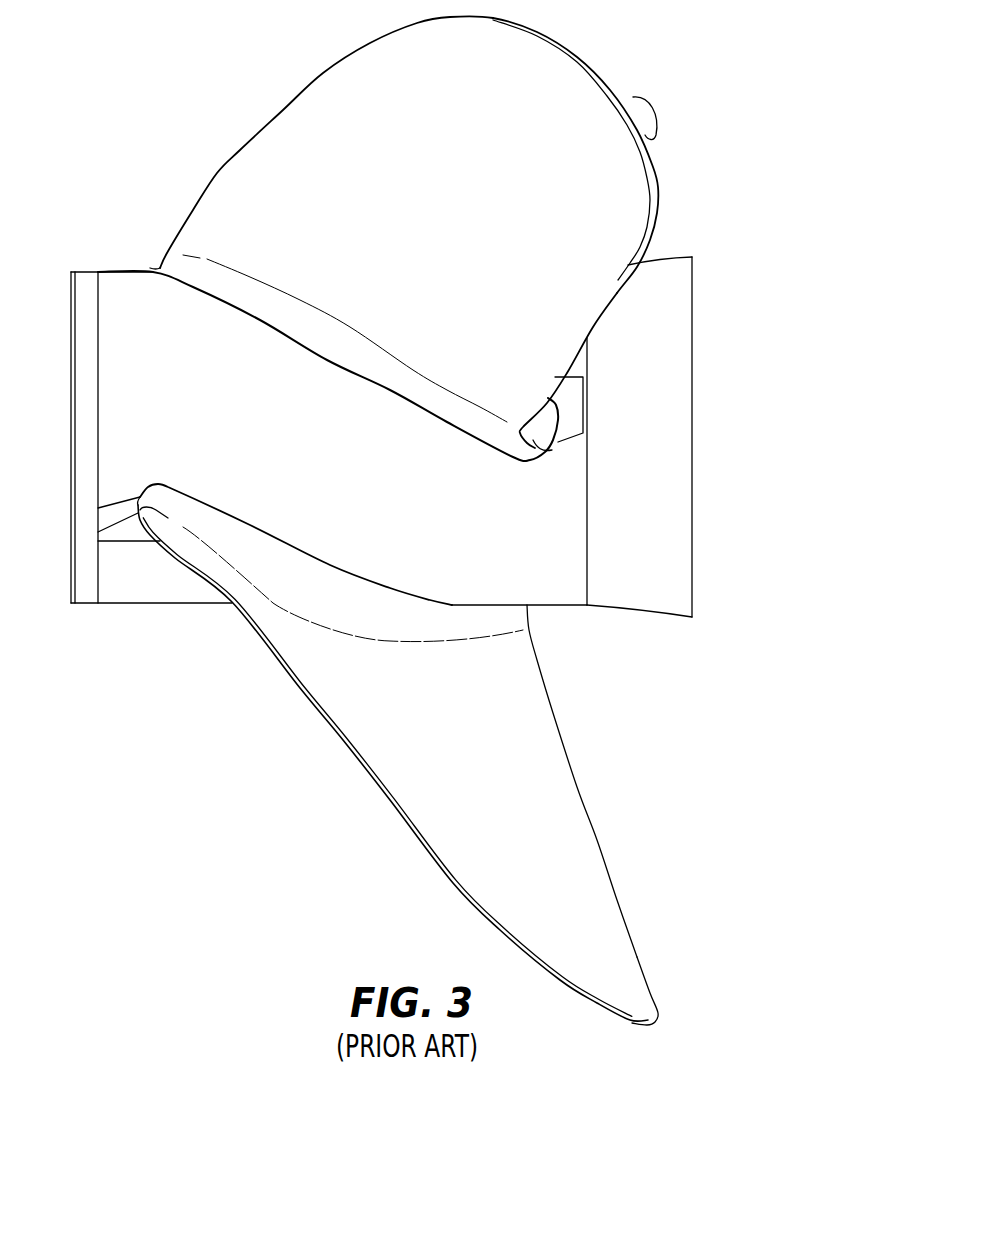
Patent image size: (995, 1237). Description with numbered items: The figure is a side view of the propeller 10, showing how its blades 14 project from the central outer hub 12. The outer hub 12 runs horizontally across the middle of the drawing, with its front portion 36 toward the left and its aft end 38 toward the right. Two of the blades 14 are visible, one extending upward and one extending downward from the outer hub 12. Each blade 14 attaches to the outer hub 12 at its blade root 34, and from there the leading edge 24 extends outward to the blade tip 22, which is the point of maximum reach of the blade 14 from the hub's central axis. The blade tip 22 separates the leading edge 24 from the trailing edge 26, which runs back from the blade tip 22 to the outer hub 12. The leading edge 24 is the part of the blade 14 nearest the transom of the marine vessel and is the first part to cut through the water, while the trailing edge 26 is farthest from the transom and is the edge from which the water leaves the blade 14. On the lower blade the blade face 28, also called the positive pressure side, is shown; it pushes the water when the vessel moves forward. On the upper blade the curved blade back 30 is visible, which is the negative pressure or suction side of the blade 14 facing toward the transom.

The propeller 10 is at (618, 42).
The outer hub 12 is at (311, 460).
The blades 14 is at (395, 60).
The blade tip 22 is at (657, 186).
The leading edge 24 is at (243, 153).
The trailing edge 26 is at (609, 306).
The blade face 28 is at (471, 750).
The blade back 30 is at (454, 205).
The blade root 34 is at (298, 312).
The front portion of the outer hub 36 is at (88, 606).
The aft end of the outer hub 38 is at (653, 473).